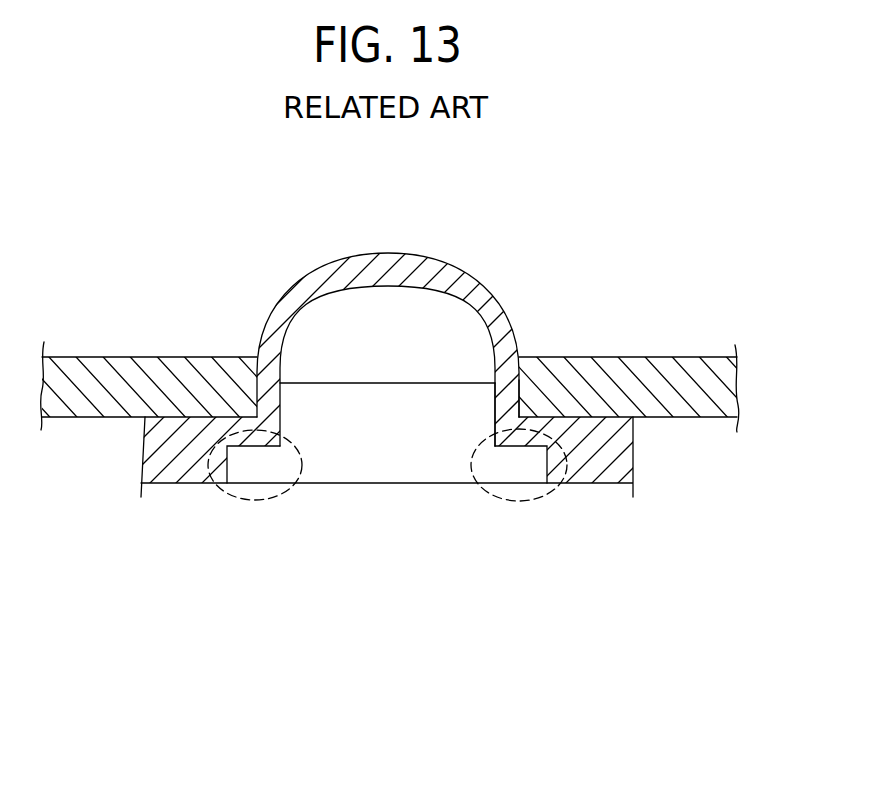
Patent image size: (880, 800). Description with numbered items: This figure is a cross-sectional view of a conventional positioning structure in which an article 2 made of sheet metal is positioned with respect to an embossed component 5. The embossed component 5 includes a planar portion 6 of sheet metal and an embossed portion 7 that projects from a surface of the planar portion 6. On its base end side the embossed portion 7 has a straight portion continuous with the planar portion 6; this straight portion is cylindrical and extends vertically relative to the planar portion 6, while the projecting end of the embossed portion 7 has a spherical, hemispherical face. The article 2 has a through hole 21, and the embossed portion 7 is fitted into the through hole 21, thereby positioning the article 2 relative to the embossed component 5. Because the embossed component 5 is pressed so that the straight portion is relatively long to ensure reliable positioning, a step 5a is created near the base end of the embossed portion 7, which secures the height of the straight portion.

The article 2 is at (723, 421).
The embossed component 5 is at (575, 486).
The step 5a is at (257, 500).
The planar portion 6 is at (176, 462).
The embossed portion 7 is at (290, 283).
The through hole 21 is at (517, 396).